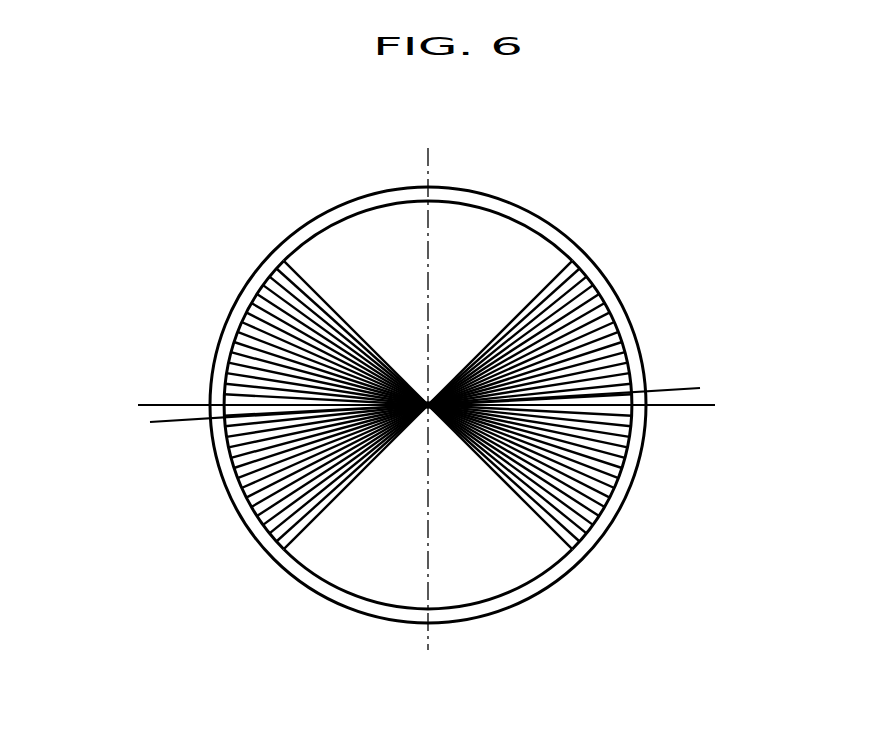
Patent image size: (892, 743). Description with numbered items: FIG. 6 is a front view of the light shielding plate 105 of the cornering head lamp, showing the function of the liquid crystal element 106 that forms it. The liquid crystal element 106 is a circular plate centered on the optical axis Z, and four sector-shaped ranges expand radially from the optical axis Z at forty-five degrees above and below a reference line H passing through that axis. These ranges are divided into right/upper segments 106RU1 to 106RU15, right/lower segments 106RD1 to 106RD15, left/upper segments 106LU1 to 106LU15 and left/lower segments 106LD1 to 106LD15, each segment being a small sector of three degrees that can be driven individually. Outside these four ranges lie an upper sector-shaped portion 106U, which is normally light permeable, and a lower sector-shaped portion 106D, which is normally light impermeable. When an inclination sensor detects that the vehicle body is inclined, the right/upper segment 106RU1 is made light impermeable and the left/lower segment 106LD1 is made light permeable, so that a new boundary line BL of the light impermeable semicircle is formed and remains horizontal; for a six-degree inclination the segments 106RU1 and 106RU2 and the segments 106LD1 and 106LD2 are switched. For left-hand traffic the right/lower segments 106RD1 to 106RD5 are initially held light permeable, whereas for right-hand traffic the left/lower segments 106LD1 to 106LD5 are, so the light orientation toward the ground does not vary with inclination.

The light shielding plate 105 is at (505, 248).
The liquid crystal element 106 is at (613, 508).
The upper sector-shaped portion 106U is at (368, 230).
The lower sector-shaped portion 106D is at (375, 575).
The left/upper segment 106LU1 is at (218, 395).
The left/upper segment 106LU15 is at (287, 267).
The right/upper segment 106RU1 is at (622, 392).
The right/upper segment 106RU2 is at (630, 385).
The right/upper segment 106RU15 is at (570, 268).
The left/lower segment 106LD1 is at (215, 418).
The left/lower segment 106LD2 is at (230, 445).
The left/lower segment 106LD5 is at (248, 478).
The left/lower segment 106LD15 is at (288, 550).
The right/lower segment 106RD1 is at (625, 413).
The right/lower segment 106RD5 is at (627, 450).
The right/lower segment 106RD15 is at (580, 550).
The reference line H is at (140, 405).
The boundary line BL is at (160, 422).
The optical axis Z is at (425, 397).